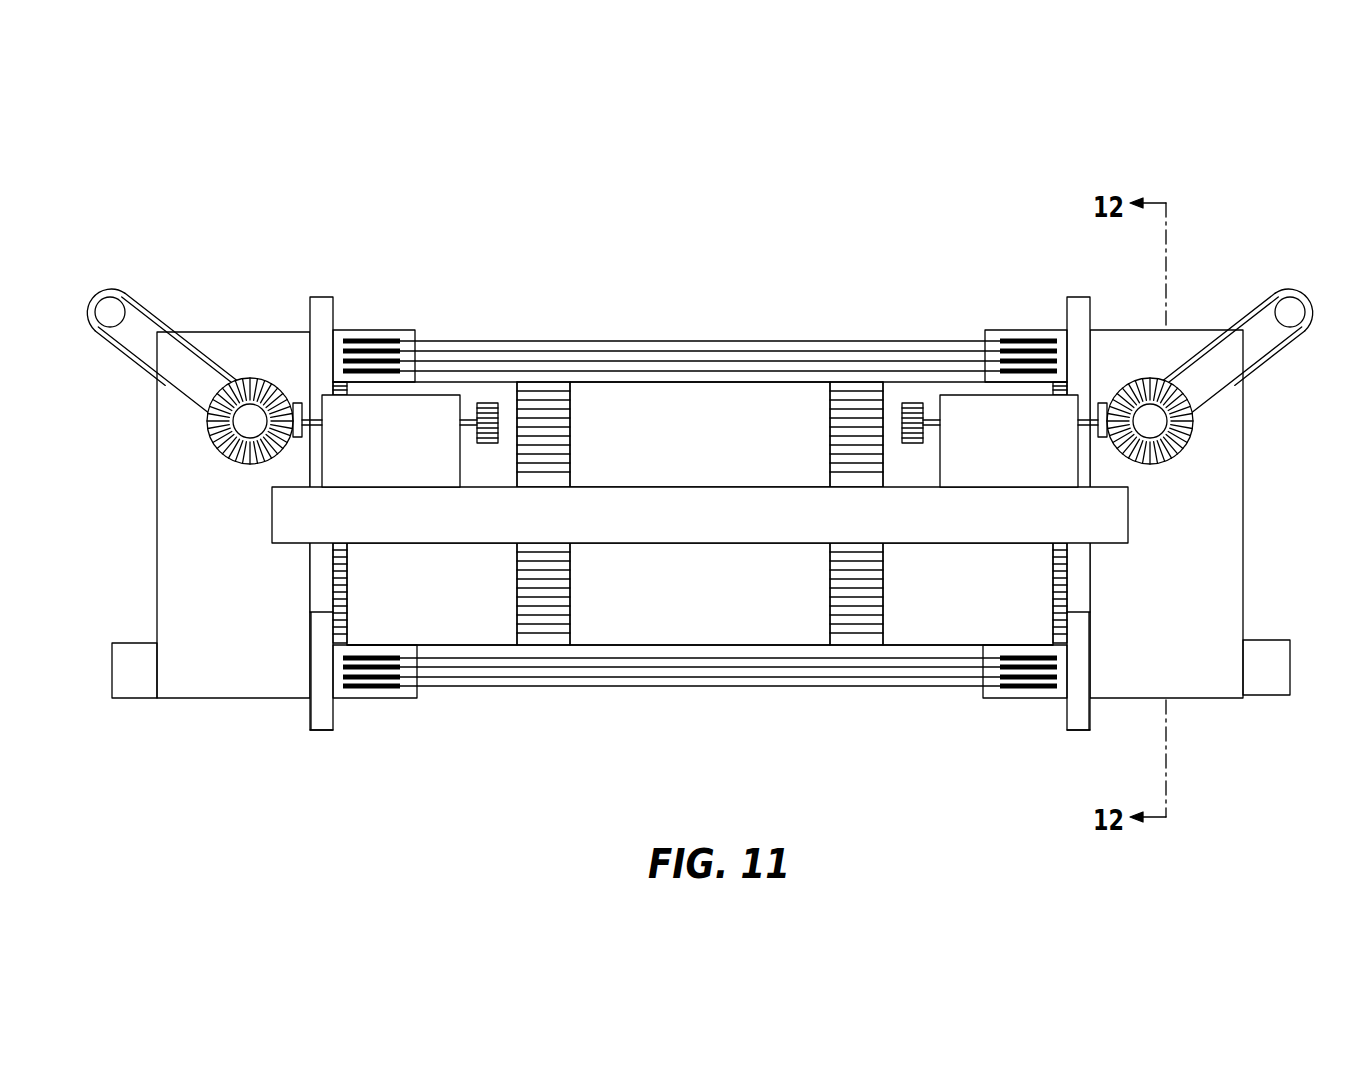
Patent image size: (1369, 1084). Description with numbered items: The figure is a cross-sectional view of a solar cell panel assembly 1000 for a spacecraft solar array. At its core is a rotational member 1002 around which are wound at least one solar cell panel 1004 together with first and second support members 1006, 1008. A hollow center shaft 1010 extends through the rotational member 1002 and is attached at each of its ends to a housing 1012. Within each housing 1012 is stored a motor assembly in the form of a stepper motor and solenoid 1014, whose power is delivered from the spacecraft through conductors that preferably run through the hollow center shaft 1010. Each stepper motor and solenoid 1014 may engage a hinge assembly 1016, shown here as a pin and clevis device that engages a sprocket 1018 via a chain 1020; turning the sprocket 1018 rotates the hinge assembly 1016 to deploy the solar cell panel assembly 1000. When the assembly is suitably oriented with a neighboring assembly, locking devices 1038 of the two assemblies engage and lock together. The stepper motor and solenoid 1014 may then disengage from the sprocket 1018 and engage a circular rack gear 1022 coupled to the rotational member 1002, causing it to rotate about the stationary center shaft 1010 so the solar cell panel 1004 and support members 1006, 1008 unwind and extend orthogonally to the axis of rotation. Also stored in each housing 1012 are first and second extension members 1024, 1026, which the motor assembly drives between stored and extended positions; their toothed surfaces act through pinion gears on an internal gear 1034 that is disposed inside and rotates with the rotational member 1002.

The solar cell panel assembly 1000 is at (818, 195).
The rotational member 1002 is at (798, 660).
The solar cell panel 1004 is at (878, 693).
The first support member 1006 is at (383, 690).
The second support member 1008 is at (1020, 688).
The hollow center shaft 1010 is at (740, 532).
The housing 1012 is at (192, 680).
The stepper motor and solenoid 1014 is at (424, 453).
The hinge assembly 1016 is at (140, 290).
The sprocket 1018 is at (207, 433).
The chain 1020 is at (125, 350).
The circular rack gear 1022 is at (573, 555).
The first extension member 1024 is at (328, 298).
The second extension member 1026 is at (322, 715).
The internal gear 1034 is at (350, 592).
The locking device 1038 is at (135, 650).